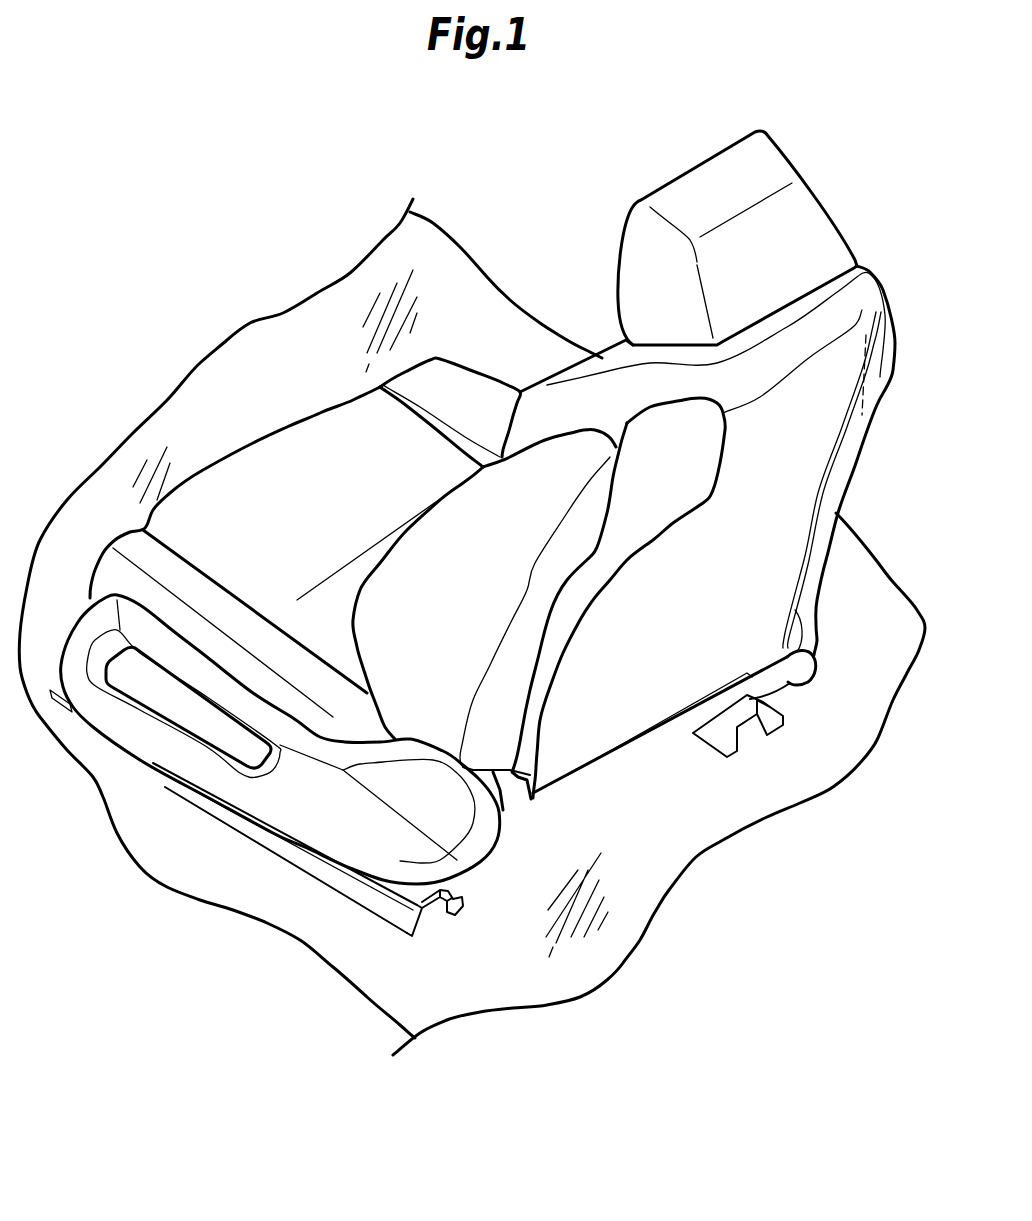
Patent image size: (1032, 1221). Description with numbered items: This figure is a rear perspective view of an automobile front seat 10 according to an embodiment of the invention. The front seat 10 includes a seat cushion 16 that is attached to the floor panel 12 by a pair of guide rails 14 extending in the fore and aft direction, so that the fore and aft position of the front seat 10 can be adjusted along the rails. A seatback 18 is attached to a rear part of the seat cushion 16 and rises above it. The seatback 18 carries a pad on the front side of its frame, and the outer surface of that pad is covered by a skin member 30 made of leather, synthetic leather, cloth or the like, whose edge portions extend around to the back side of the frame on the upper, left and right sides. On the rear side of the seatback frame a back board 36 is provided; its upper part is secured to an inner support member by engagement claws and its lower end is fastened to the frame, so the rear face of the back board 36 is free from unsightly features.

The front seat 10 is at (595, 324).
The floor panel 12 is at (363, 287).
The guide rails 14 is at (453, 903).
The seat cushion 16 is at (293, 433).
The seatback 18 is at (822, 356).
The skin member 30 is at (663, 377).
The back board 36 is at (837, 427).